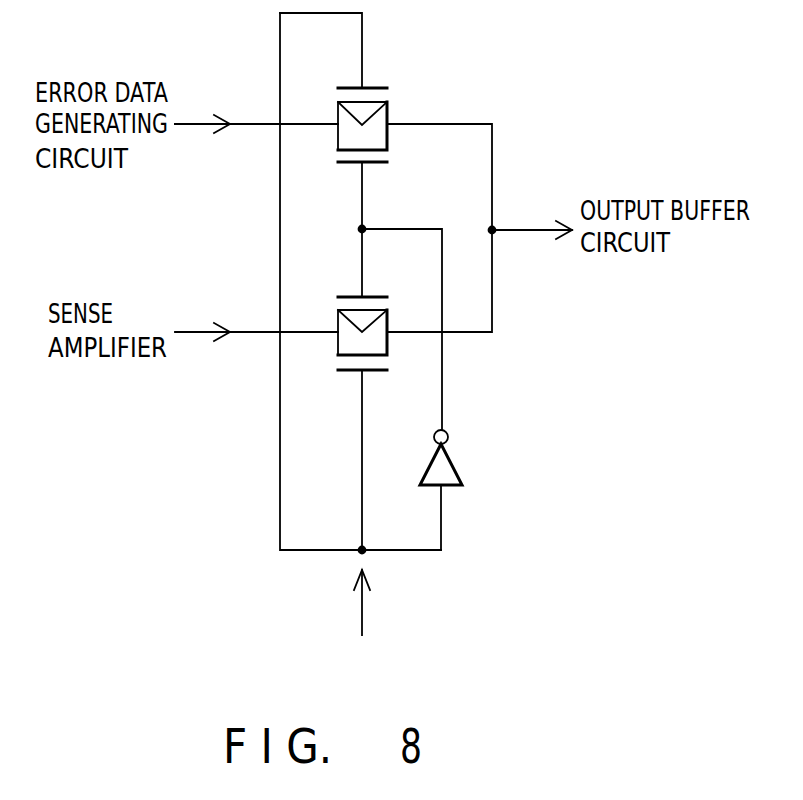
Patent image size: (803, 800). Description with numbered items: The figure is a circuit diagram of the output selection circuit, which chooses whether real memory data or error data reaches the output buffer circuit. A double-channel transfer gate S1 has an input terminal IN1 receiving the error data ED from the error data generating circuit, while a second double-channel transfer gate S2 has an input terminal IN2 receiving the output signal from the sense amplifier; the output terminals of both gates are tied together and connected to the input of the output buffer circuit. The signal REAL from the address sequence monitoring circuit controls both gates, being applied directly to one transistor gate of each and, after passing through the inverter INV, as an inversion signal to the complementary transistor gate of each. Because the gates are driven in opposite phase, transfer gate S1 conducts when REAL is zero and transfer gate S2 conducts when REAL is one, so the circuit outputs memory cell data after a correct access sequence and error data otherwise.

The double-channel transfer gate S1 is at (387, 113).
The double-channel transfer gate S2 is at (384, 312).
The inverter INV is at (465, 490).
The error data ED is at (256, 108).
The input terminal IN1 is at (256, 147).
The input terminal IN2 is at (256, 350).
The signal REAL is at (362, 620).